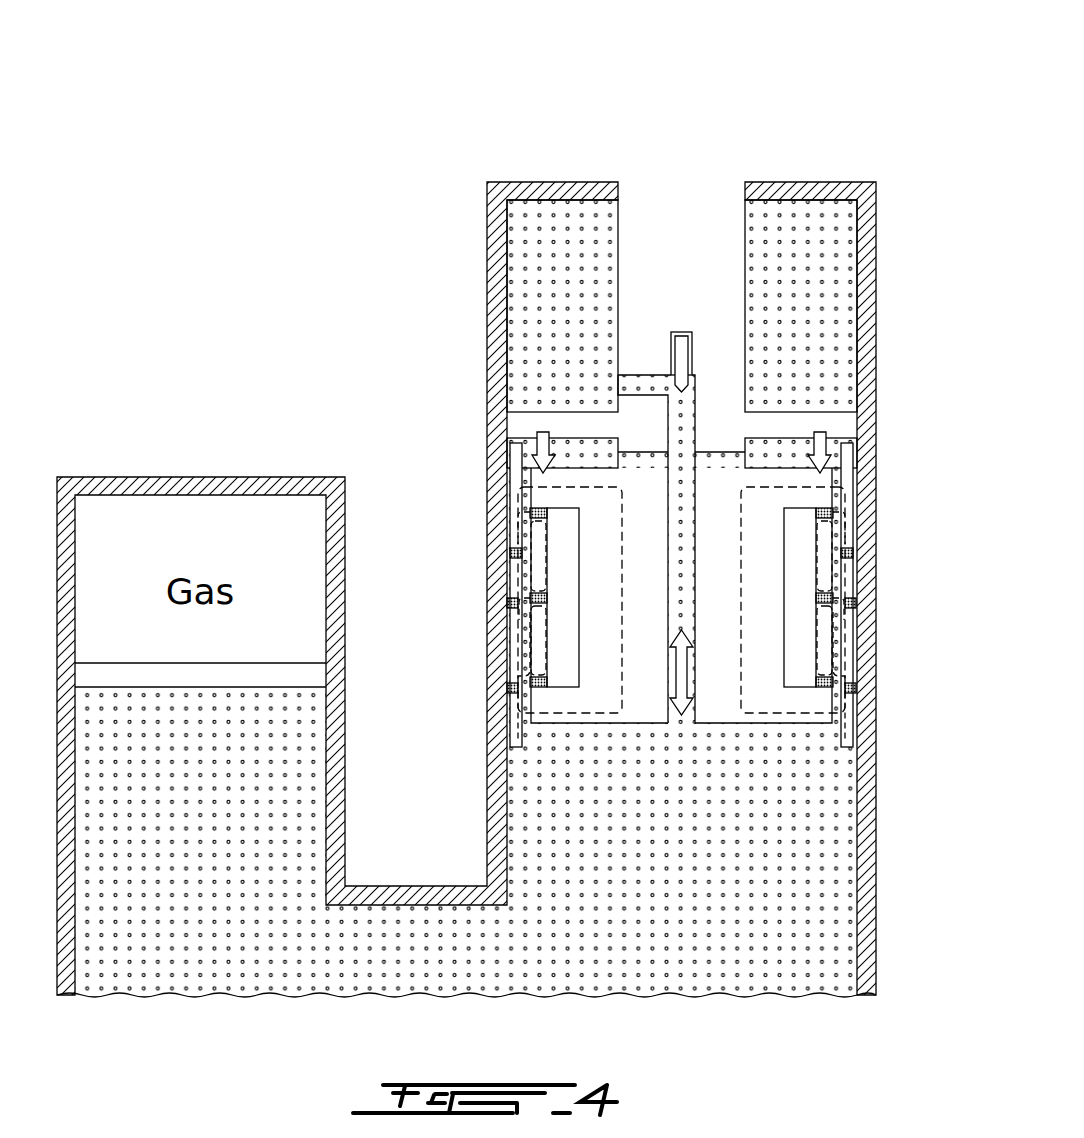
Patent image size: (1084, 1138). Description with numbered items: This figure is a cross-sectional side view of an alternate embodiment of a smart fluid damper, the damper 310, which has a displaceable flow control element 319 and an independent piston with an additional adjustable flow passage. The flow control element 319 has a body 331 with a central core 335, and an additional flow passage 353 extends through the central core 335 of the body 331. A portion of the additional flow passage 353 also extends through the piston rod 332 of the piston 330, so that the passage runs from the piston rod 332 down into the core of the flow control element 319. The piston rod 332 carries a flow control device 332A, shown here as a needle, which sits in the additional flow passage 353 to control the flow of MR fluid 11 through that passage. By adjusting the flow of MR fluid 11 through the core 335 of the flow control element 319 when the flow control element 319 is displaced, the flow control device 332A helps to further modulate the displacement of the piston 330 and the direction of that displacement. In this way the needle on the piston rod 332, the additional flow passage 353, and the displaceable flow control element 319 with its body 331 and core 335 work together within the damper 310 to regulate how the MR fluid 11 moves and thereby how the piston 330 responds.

The damper 310 is at (852, 144).
The piston 330 is at (757, 400).
The piston rod 332 is at (713, 292).
The flow control device 332A is at (671, 343).
The additional flow passage 353 is at (680, 588).
The central core 335 is at (683, 675).
The flow control element 319 is at (813, 748).
The body 331 is at (727, 725).
The MR fluid 11 is at (652, 915).